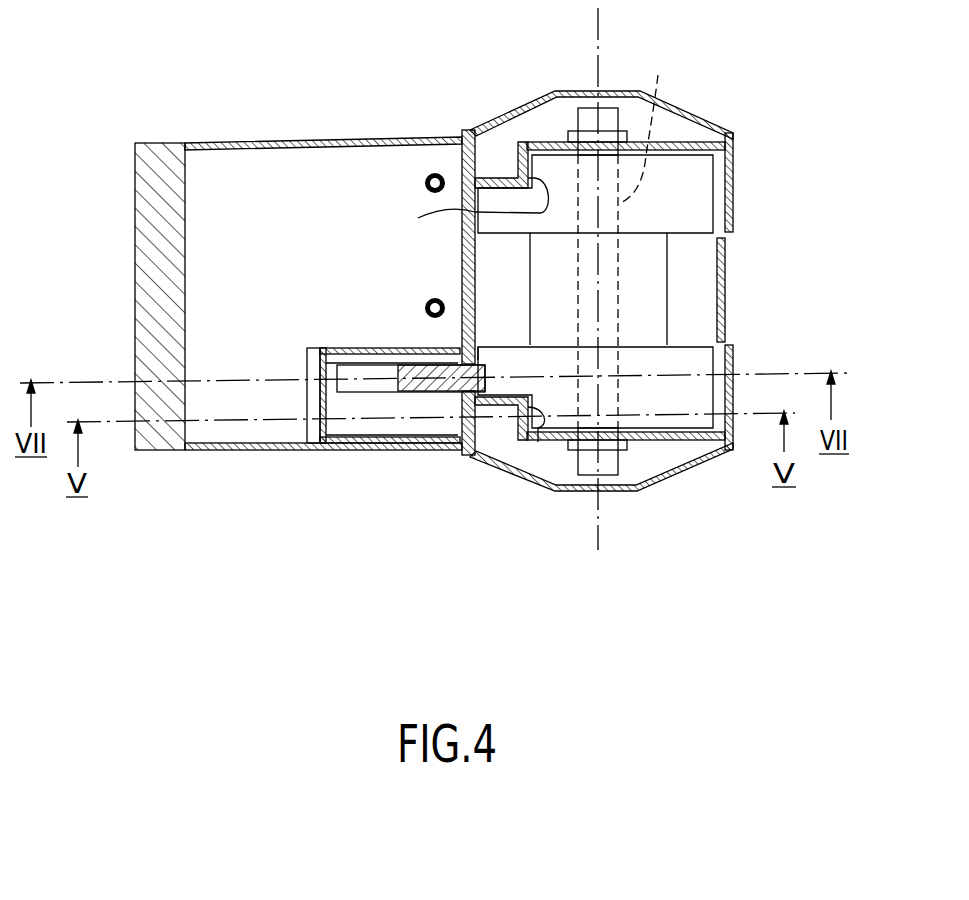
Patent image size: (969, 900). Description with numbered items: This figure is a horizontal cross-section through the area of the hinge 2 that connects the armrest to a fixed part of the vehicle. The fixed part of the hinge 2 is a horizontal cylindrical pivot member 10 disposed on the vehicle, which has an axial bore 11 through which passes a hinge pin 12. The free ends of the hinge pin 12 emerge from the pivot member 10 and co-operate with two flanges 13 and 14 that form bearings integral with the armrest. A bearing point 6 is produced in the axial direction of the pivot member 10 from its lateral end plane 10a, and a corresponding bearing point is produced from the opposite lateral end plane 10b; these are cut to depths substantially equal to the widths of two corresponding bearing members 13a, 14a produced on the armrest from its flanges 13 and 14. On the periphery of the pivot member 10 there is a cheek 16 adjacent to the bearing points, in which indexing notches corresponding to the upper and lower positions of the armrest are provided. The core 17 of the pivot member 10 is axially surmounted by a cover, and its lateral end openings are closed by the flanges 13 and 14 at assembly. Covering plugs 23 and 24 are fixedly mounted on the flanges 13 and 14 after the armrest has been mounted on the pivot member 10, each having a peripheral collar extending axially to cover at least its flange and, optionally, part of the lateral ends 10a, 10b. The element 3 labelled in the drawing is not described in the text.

The hinge 2 is at (517, 483).
The drive shaft 3 is at (432, 393).
The bearing point 6 is at (537, 535).
The pivot member 10 is at (680, 258).
The lateral end plane 10a is at (550, 150).
The lateral end plane 10b is at (553, 443).
The axial bore 11 is at (645, 124).
The hinge pin 12 is at (592, 123).
The flange 13 is at (692, 142).
The bearing member 13a is at (505, 176).
The flange 14 is at (652, 441).
The bearing member 14a is at (495, 407).
The cheek 16 is at (498, 354).
The core 17 is at (667, 292).
The covering plug 23 is at (617, 92).
The covering plug 24 is at (620, 491).